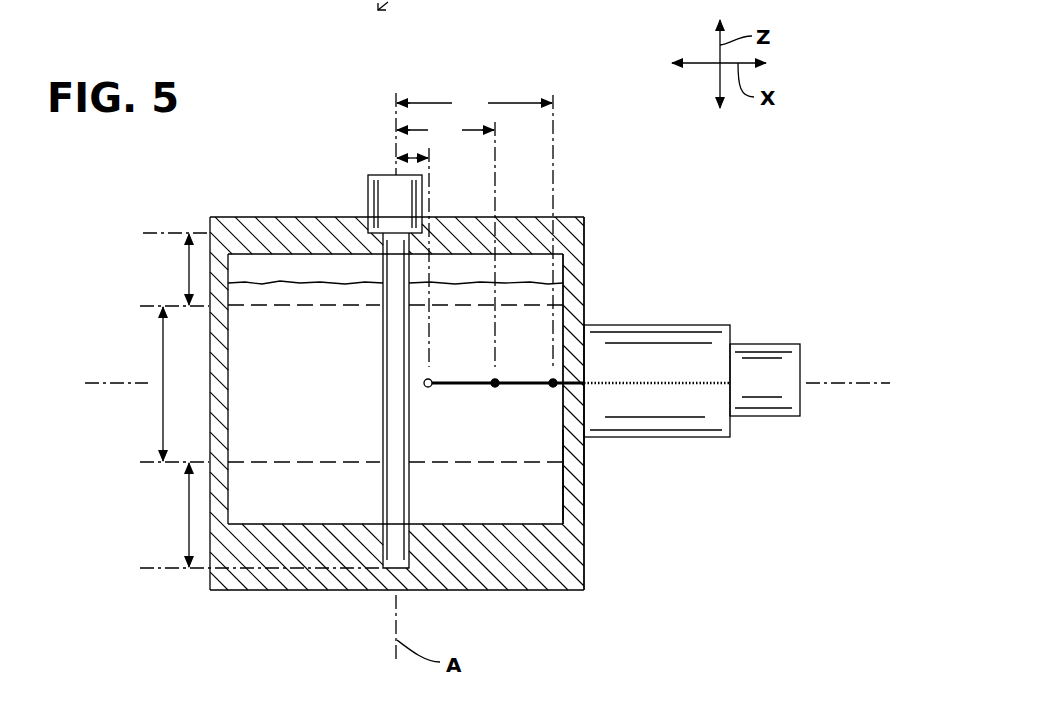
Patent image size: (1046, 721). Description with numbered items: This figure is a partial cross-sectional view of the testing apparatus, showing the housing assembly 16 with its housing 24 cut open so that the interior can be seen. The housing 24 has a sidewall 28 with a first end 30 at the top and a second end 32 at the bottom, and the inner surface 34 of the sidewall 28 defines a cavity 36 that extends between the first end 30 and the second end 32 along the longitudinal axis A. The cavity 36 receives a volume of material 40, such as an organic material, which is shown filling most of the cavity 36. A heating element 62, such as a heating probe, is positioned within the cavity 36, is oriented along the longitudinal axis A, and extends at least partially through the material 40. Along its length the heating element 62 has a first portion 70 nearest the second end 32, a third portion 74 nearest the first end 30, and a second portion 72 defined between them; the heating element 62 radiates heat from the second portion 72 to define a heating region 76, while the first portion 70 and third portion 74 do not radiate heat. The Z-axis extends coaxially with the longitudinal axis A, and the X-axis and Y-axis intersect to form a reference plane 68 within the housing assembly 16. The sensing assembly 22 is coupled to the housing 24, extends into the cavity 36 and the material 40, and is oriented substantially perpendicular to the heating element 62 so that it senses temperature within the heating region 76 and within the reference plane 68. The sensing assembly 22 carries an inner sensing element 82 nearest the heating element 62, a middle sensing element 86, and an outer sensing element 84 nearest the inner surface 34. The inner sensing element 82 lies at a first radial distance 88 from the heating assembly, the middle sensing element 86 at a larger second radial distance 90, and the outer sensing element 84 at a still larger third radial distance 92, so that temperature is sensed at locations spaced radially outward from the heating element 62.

The housing assembly 16 is at (601, 178).
The sensing assembly 22 is at (675, 325).
The housing 24 is at (584, 283).
The sidewall 28 is at (584, 283).
The first end 30 is at (572, 218).
The second end 32 is at (555, 590).
The inner surface 34 is at (560, 472).
The cavity 36 is at (248, 272).
The material 40 is at (238, 422).
The heating element 62 is at (395, 204).
The reference plane 68 is at (845, 383).
The first portion 70 is at (189, 522).
The second portion 72 is at (162, 345).
The third portion 74 is at (189, 270).
The heating region 76 is at (362, 371).
The inner sensing element 82 is at (428, 390).
The outer sensing element 84 is at (552, 390).
The middle sensing element 86 is at (494, 390).
The first radial distance 88 is at (415, 154).
The second radial distance 90 is at (445, 131).
The third radial distance 92 is at (474, 104).